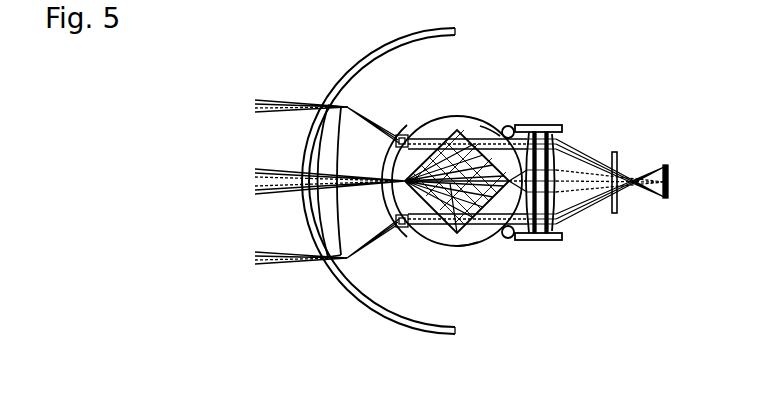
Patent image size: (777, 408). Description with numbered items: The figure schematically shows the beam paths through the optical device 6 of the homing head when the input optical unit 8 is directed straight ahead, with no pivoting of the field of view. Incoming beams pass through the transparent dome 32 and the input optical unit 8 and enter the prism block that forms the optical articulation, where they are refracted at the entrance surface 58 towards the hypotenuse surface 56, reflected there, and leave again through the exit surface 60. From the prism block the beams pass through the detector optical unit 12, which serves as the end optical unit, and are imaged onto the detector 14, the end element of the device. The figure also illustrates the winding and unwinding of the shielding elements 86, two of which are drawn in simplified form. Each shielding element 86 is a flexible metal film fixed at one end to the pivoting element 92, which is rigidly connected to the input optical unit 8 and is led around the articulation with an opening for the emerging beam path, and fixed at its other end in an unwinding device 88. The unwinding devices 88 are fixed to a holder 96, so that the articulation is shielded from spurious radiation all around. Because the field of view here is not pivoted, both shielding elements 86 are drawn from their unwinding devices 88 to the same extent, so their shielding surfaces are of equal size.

The optical device 6 is at (399, 275).
The input optical unit 8 is at (369, 115).
The detector optical unit 12 is at (562, 138).
The detector 14 is at (669, 178).
The dome 32 is at (338, 285).
The hypotenuse surface 56 is at (457, 235).
The entrance surface 58 is at (447, 127).
The exit surface 60 is at (486, 123).
The shielding element 86 is at (492, 126).
The unwinding device 88 is at (514, 128).
The pivoting element 92 is at (409, 229).
The holder 96 is at (565, 241).